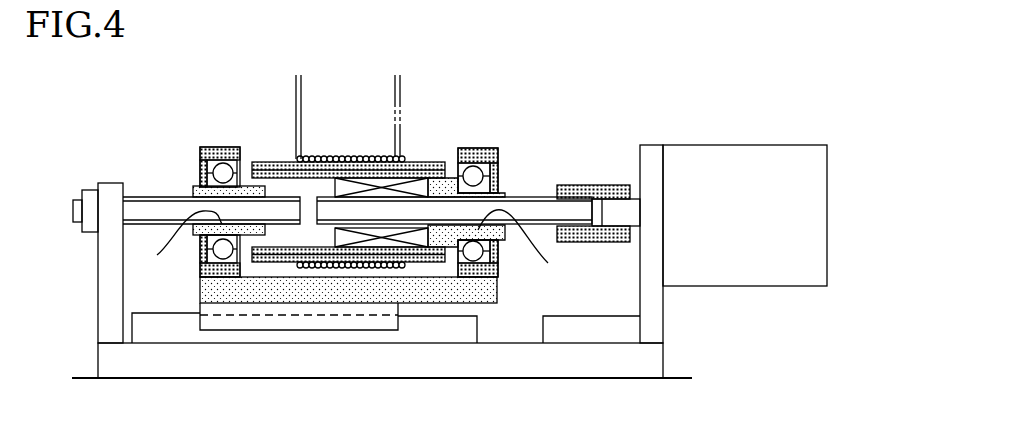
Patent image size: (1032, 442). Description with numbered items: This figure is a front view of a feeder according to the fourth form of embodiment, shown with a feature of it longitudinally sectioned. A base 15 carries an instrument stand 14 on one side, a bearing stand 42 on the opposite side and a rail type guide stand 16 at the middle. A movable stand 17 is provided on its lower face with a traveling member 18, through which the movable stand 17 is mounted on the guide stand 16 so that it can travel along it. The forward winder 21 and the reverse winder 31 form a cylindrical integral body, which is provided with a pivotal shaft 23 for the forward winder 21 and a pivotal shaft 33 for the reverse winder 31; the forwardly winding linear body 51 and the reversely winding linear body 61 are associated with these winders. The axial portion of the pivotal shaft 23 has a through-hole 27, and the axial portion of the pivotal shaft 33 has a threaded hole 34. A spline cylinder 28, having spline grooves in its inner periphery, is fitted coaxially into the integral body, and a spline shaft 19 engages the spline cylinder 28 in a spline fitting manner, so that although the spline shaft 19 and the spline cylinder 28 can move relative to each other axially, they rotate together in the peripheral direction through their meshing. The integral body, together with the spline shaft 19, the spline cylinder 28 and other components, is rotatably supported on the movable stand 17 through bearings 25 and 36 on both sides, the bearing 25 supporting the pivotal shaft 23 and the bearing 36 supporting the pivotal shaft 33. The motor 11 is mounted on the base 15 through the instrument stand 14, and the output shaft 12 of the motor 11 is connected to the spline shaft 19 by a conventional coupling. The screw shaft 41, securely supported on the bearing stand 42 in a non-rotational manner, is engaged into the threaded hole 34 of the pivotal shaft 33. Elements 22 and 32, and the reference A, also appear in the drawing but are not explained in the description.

The motor 11 is at (692, 168).
The output shaft 12 is at (617, 213).
The instrument stand 14 is at (653, 307).
The base 15 is at (337, 362).
The rail type guide stand 16 is at (167, 332).
The movable stand 17 is at (457, 293).
The traveling member 18 is at (257, 322).
The spline shaft 19 is at (523, 210).
The forward winder 21 is at (440, 158).
The stator core 22 is at (418, 168).
The pivotal shaft 23 is at (494, 197).
The bearing 25 is at (475, 171).
The through-hole 27 is at (524, 246).
The spline cylinder 28 is at (384, 240).
The reverse winder 31 is at (257, 159).
The rotor magnet 32 is at (287, 163).
The pivotal shaft 33 is at (205, 193).
The threaded hole 34 is at (181, 243).
The bearing 36 is at (221, 173).
The screw shaft 41 is at (172, 210).
The bearing stand 42 is at (108, 202).
The forwardly winding linear body 51 is at (401, 100).
The reversely winding linear body 61 is at (298, 120).
The reference height A is at (79, 376).